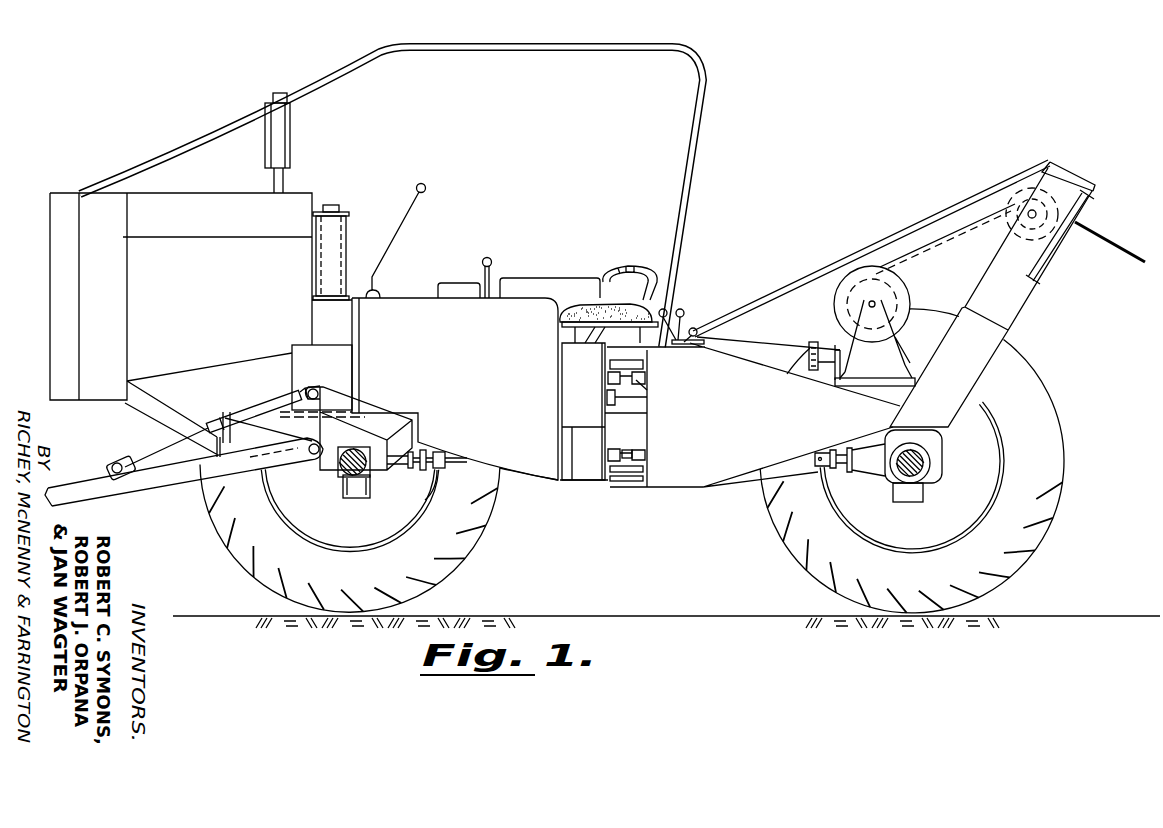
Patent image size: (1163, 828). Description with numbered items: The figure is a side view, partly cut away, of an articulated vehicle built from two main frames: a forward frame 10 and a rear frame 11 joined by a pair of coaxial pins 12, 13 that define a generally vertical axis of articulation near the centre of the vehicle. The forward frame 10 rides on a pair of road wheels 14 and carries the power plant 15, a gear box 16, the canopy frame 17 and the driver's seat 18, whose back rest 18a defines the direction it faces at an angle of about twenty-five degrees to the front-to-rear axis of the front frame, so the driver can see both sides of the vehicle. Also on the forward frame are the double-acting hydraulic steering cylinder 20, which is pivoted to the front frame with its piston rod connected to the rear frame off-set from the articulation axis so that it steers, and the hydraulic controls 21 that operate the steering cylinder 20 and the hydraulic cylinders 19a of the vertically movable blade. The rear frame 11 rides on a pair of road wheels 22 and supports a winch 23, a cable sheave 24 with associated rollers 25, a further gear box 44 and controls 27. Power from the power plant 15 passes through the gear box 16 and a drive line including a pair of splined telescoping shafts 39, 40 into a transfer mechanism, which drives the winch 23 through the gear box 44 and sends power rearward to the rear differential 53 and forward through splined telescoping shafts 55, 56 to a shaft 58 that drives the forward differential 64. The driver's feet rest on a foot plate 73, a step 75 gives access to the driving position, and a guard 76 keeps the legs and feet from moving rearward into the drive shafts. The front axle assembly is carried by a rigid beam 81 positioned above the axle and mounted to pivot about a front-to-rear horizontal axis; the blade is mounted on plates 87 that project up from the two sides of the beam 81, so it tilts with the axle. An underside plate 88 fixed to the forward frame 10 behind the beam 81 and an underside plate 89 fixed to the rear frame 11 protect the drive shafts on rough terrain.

The forward frame 10 is at (193, 507).
The rear frame 11 is at (697, 489).
The coaxial pin 12 is at (647, 368).
The coaxial pin 13 is at (630, 490).
The road wheels 14 is at (243, 553).
The power plant 15 is at (293, 200).
The gear box 16 is at (400, 297).
The canopy frame 17 is at (704, 94).
The driver's seat 18 is at (578, 298).
The back rest 18a is at (633, 273).
The hydraulic cylinders 19a is at (254, 413).
The double-acting hydraulic steering cylinder 20 is at (607, 397).
The hydraulic controls 21 is at (488, 252).
The road wheels 22 is at (815, 573).
The winch 23 is at (860, 273).
The cable sheave 24 is at (1017, 193).
The rollers 25 is at (1057, 253).
The controls 27 is at (690, 303).
The splined telescoping shaft 39 is at (612, 377).
The splined telescoping shaft 40 is at (643, 383).
The gear box 44 is at (723, 370).
The rear differential 53 is at (942, 472).
The splined telescoping shaft 55 is at (645, 455).
The splined telescoping shaft 56 is at (627, 450).
The shaft 58 is at (475, 465).
The forward differential 64 is at (370, 497).
The foot plate 73 is at (583, 427).
The step 75 is at (588, 483).
The guard 76 is at (607, 415).
The beam 81 is at (268, 442).
The plates 87 is at (337, 402).
The underside plate 88 is at (535, 480).
The underside plate 89 is at (773, 472).